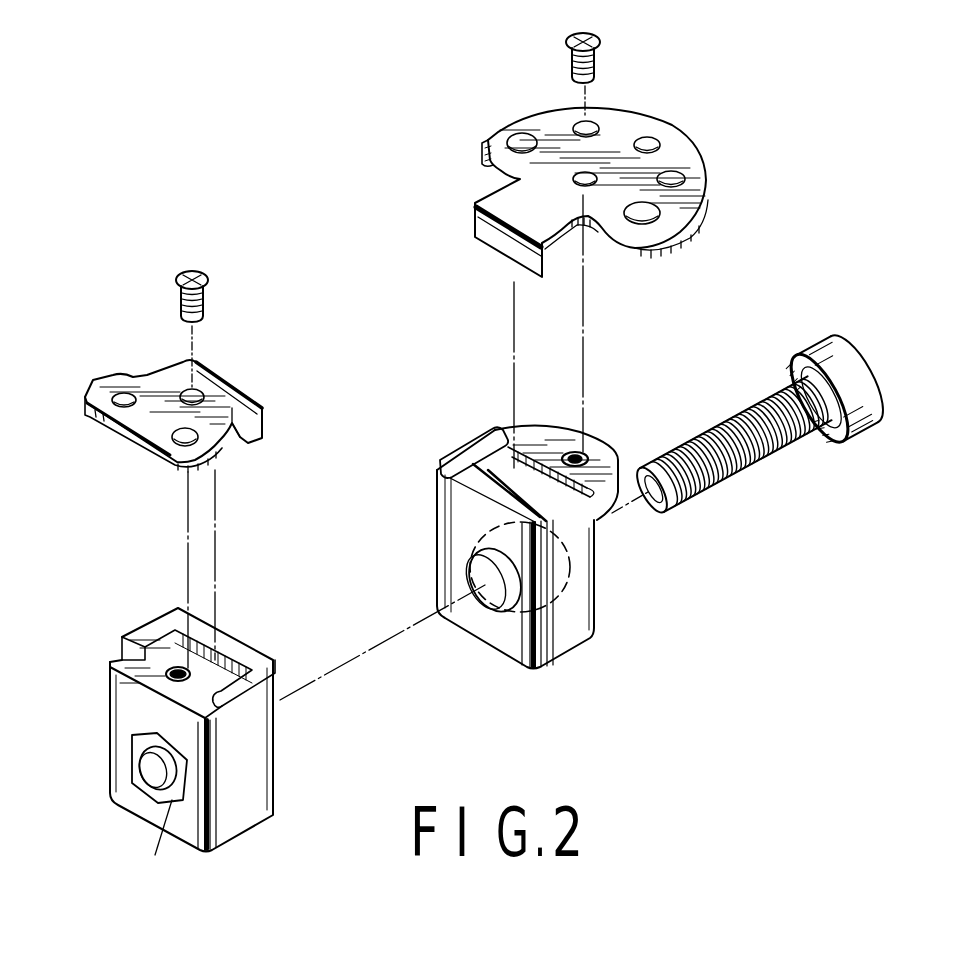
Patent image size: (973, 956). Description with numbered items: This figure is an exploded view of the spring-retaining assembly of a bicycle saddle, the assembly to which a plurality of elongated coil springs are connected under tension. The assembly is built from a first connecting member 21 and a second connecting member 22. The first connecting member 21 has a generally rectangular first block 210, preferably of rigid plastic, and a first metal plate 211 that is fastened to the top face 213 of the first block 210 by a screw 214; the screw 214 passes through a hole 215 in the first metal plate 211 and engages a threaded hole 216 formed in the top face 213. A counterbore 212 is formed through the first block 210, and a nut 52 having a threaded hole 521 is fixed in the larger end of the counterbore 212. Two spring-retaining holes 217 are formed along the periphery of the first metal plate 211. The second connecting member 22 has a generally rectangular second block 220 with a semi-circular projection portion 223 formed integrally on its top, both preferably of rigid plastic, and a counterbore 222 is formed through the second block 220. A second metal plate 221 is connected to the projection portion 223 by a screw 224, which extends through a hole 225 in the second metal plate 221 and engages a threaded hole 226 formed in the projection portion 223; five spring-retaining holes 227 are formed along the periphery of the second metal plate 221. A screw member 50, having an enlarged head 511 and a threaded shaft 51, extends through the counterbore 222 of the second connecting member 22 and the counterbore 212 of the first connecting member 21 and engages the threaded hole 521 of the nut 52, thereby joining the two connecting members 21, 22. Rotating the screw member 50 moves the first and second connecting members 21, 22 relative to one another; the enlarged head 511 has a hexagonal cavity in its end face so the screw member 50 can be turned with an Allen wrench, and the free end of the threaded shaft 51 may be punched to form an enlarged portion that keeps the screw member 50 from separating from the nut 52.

The first connecting member 21 is at (186, 751).
The first block 210 is at (245, 823).
The first metal plate 211 is at (201, 429).
The counterbore 212 is at (160, 848).
The top face 213 is at (122, 662).
The screw 214 is at (207, 303).
The hole 215 is at (200, 387).
The threaded hole 216 is at (170, 677).
The spring-retaining holes 217 is at (117, 393).
The second connecting member 22 is at (557, 544).
The second block 220 is at (597, 560).
The second metal plate 221 is at (621, 204).
The counterbore 222 is at (515, 602).
The semi-circular projection portion 223 is at (550, 438).
The screw 224 is at (597, 65).
The hole 225 is at (592, 185).
The threaded hole 226 is at (585, 455).
The spring-retaining holes 227 is at (658, 139).
The screw member 50 is at (786, 432).
The threaded shaft 51 is at (732, 446).
The enlarged head 511 is at (837, 388).
The nut 52 is at (107, 794).
The threaded hole 521 is at (138, 762).